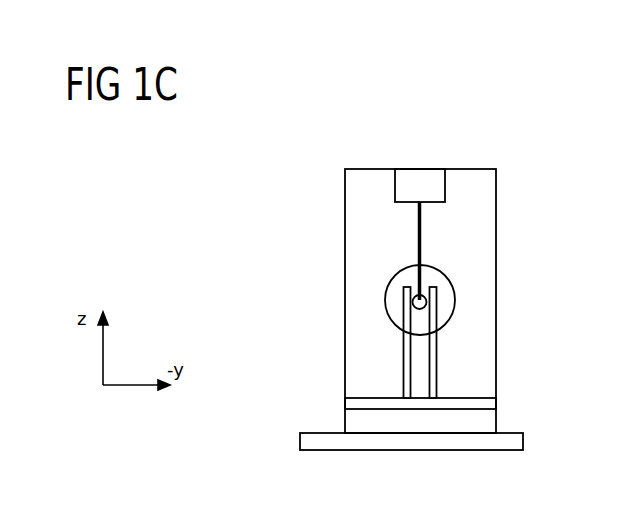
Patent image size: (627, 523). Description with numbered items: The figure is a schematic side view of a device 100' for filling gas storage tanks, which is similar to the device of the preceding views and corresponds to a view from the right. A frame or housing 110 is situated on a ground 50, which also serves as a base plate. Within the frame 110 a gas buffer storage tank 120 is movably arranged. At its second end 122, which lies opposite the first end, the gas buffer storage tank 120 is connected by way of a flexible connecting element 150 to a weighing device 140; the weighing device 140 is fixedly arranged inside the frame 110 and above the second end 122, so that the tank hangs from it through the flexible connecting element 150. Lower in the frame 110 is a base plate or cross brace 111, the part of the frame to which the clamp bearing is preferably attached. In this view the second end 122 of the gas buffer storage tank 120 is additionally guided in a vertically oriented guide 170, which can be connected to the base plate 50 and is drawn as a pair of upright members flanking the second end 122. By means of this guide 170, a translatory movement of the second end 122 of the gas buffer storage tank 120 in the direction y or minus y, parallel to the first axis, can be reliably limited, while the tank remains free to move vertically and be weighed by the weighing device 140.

The device 100' is at (417, 272).
The ground 50 is at (313, 439).
The frame 110 is at (497, 169).
The base plate or cross brace 111 is at (488, 403).
The weighing device 140 is at (427, 182).
The flexible connecting element 150 is at (418, 247).
The gas buffer storage tank 120 is at (393, 305).
The second end 122 is at (441, 265).
The guide 170 is at (404, 378).